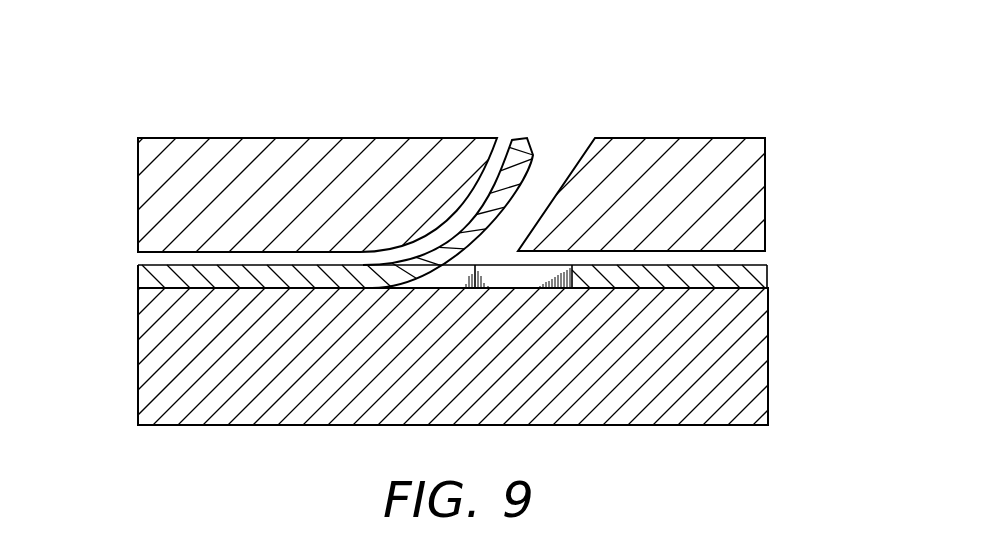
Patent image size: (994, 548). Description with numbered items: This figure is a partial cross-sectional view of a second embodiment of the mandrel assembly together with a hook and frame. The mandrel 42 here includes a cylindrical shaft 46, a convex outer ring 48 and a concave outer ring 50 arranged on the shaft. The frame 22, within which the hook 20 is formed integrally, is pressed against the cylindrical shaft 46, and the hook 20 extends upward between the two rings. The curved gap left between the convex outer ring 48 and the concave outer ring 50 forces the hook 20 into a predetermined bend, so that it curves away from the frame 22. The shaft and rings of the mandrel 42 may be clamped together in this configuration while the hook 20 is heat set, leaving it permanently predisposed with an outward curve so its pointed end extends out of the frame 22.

The hook 20 is at (511, 140).
The frame 22 is at (263, 265).
The mandrel 42 is at (138, 310).
The cylindrical shaft 46 is at (768, 347).
The convex outer ring 48 is at (353, 138).
The concave outer ring 50 is at (675, 138).